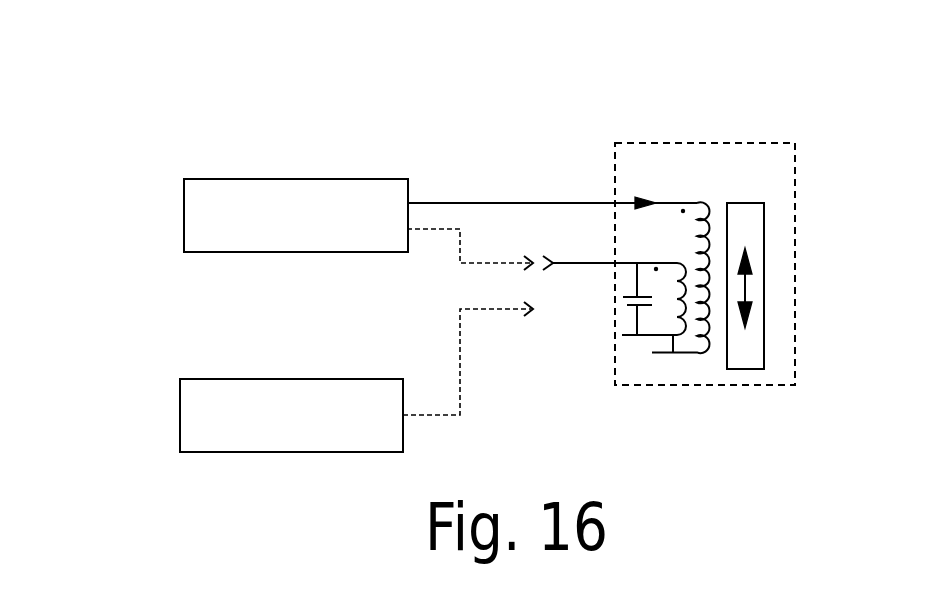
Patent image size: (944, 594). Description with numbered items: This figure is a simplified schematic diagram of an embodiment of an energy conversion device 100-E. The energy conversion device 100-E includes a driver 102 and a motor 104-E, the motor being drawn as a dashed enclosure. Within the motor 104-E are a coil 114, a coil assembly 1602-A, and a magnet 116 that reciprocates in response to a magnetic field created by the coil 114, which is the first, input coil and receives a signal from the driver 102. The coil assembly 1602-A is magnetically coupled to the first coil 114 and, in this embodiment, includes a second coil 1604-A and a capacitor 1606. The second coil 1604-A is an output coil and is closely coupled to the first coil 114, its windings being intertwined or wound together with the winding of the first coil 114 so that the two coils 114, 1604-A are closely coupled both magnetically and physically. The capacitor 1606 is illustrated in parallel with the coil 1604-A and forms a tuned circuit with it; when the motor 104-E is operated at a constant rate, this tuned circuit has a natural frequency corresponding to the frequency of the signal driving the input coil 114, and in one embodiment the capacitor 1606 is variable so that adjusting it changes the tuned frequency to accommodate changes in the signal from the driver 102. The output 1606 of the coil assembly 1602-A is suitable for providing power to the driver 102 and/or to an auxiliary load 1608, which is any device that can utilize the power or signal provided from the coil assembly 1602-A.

The energy conversion device 100-E is at (157, 54).
The driver 102 is at (297, 179).
The auxiliary load 1608 is at (293, 379).
The capacitor 1606 is at (590, 263).
The coil 114 is at (665, 203).
The coil 1604-A is at (674, 340).
The coil assembly 1602-A is at (691, 369).
The magnet 116 is at (764, 337).
The motor 104-E is at (775, 142).